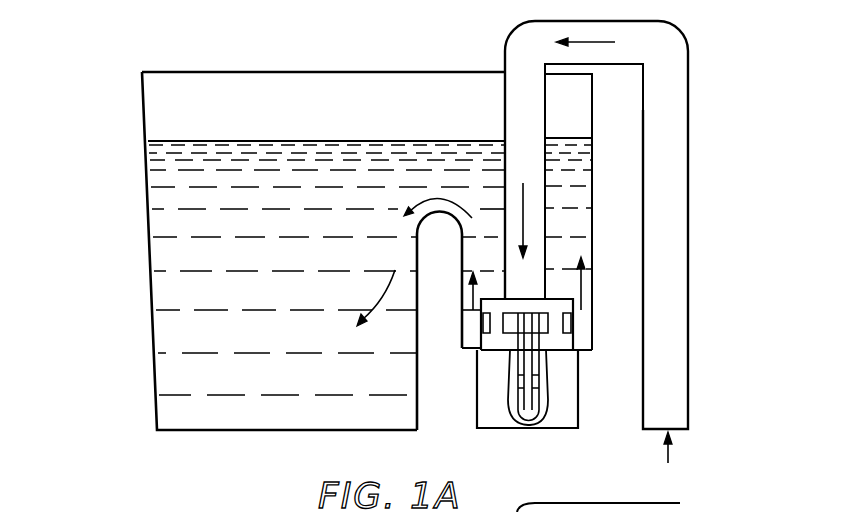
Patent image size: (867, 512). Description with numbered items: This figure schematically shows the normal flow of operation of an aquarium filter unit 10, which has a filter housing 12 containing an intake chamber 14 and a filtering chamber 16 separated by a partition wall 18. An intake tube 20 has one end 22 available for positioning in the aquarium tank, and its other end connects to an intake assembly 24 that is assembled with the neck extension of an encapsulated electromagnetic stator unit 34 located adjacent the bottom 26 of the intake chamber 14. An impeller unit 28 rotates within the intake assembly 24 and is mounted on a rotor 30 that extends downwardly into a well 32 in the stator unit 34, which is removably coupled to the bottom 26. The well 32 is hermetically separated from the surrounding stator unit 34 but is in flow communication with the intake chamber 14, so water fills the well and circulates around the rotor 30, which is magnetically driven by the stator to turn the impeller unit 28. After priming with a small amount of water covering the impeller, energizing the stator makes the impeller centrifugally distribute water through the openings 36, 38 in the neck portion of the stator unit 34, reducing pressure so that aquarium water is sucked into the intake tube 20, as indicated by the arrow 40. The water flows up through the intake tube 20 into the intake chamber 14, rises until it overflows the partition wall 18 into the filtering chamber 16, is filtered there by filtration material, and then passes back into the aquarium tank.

The aquarium filter unit 10 is at (334, 69).
The filter housing 12 is at (147, 206).
The intake chamber 14 is at (572, 208).
The filtering chamber 16 is at (296, 156).
The partition wall 18 is at (420, 246).
The intake tube 20 is at (680, 104).
The end of intake tube 22 is at (683, 408).
The intake assembly 24 is at (532, 300).
The bottom of intake chamber 26 is at (598, 343).
The impeller unit 28 is at (525, 323).
The rotor 30 is at (526, 346).
The well 32 is at (532, 412).
The electromagnetic stator unit 34 is at (575, 397).
The opening 36 is at (484, 326).
The opening 38 is at (567, 323).
The arrow 40 is at (670, 454).